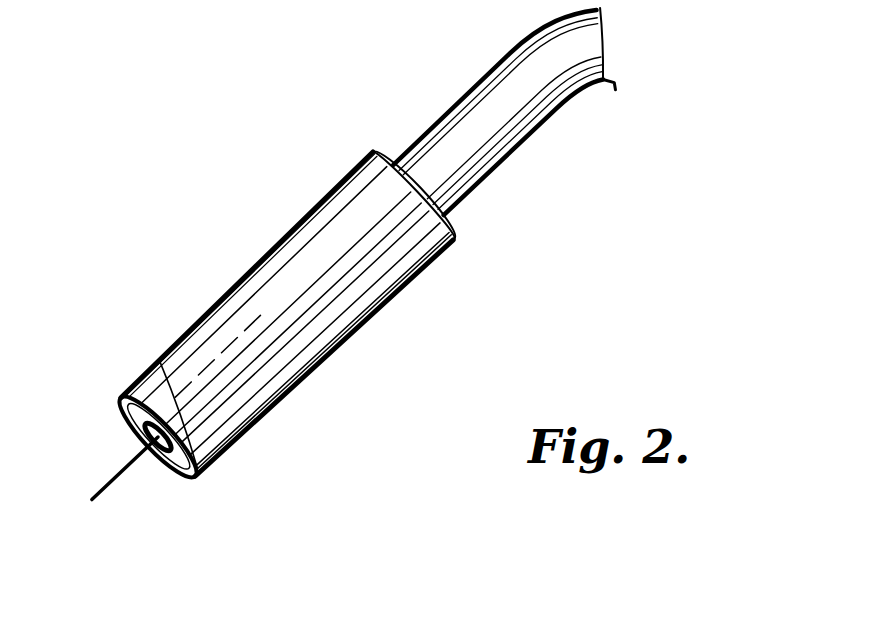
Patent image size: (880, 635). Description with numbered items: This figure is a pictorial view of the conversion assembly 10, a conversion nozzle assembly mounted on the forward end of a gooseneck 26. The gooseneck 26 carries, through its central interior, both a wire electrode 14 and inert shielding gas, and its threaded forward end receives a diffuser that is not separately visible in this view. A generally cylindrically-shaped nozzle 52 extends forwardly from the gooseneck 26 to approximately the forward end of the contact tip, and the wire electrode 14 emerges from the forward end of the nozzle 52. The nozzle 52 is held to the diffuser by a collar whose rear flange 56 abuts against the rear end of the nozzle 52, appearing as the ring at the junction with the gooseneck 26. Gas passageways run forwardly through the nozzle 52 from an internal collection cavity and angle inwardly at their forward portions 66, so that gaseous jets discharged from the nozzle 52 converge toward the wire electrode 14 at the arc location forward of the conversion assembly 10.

The conversion assembly 10 is at (229, 188).
The wire electrode 14 is at (98, 497).
The gooseneck 26 is at (497, 67).
The nozzle 52 is at (205, 303).
The rear flange 56 is at (375, 151).
The forward portions 66 is at (128, 420).